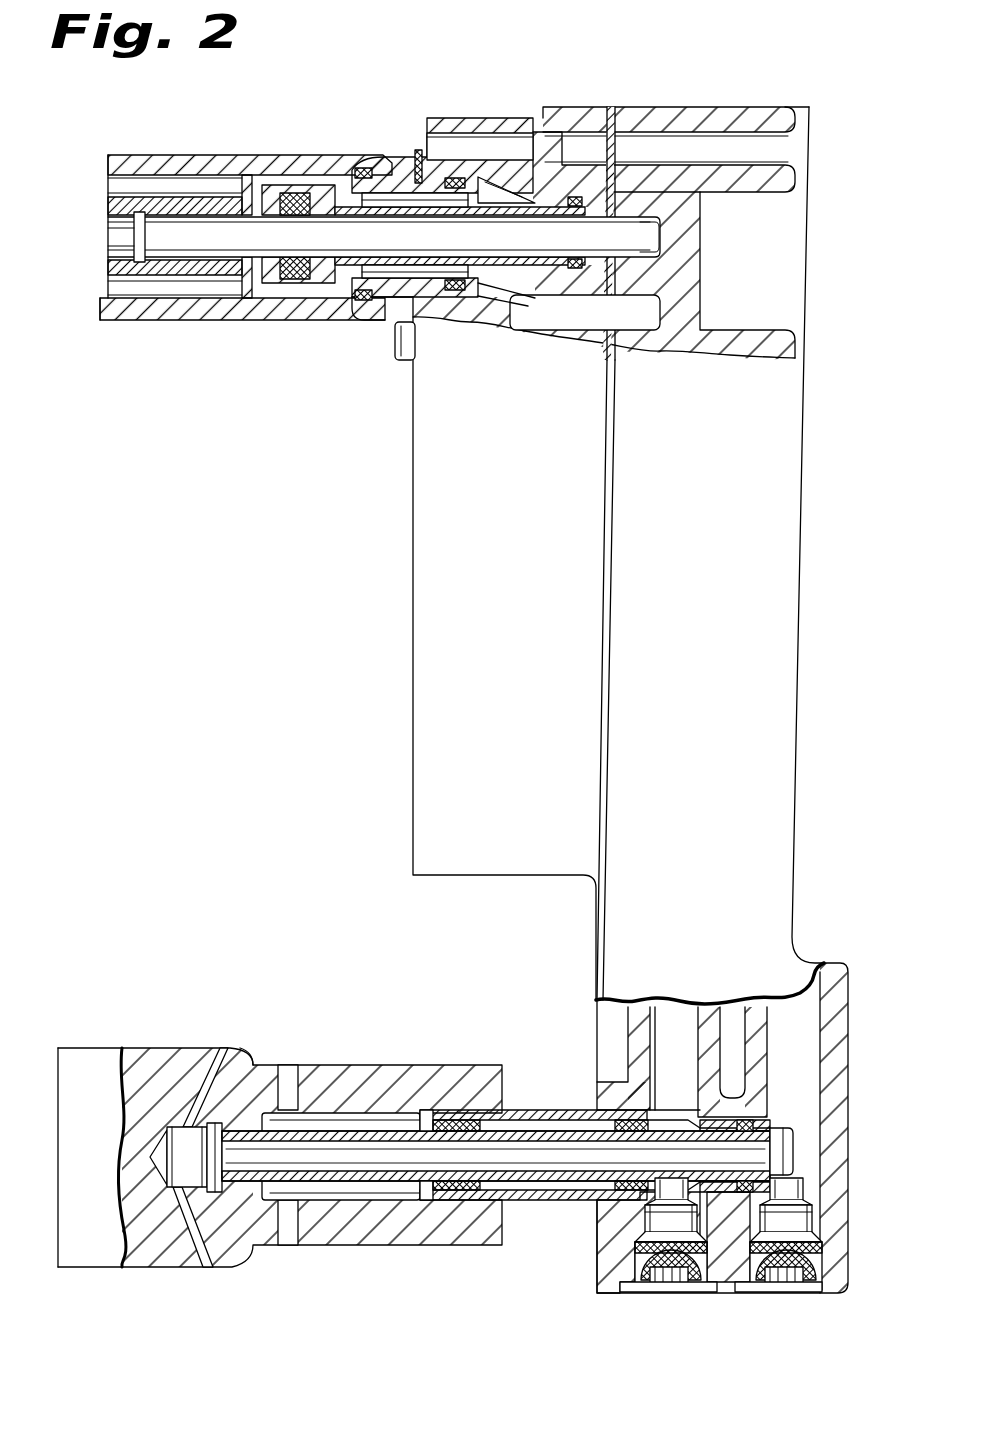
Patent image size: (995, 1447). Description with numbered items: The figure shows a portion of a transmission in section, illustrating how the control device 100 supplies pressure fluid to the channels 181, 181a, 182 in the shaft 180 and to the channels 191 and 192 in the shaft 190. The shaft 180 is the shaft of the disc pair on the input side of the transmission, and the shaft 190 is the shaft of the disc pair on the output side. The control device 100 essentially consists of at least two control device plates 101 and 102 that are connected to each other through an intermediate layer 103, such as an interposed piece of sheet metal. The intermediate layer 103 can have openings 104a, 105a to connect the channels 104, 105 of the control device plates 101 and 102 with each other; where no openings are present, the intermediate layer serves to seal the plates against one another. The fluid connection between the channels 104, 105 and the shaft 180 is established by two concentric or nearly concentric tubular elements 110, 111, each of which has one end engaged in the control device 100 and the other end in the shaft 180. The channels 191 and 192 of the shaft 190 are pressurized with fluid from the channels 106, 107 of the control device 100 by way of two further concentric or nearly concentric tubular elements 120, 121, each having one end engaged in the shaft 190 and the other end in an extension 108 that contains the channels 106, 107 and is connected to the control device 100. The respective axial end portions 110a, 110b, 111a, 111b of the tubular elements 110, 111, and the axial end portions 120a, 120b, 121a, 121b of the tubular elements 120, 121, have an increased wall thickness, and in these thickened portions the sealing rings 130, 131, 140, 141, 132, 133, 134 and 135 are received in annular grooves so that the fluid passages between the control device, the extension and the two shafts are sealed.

The control device 100 is at (804, 698).
The control device plate 101 is at (786, 614).
The control device plate 102 is at (414, 560).
The intermediate layer 103 is at (601, 598).
The channel 104 is at (652, 238).
The opening 104a is at (615, 229).
The channel 105 is at (652, 316).
The opening 105a is at (612, 290).
The channel 106 is at (795, 1070).
The channel 107 is at (673, 1058).
The extension 108 is at (854, 1211).
The tubular element 110 is at (405, 163).
The axial end portion 110a is at (380, 300).
The axial end portion 110b is at (474, 178).
The tubular element 111 is at (312, 266).
The axial end portion 111a is at (285, 198).
The axial end portion 111b is at (601, 197).
The tubular element 120 is at (513, 1110).
The axial end portion 120a is at (438, 1110).
The axial end portion 120b is at (612, 1110).
The tubular element 121 is at (372, 1182).
The axial end portion 121a is at (257, 1200).
The axial end portion 121b is at (770, 1124).
The sealing ring 130 is at (303, 192).
The sealing ring 131 is at (573, 197).
The sealing ring 132 is at (252, 1062).
The sealing ring 133 is at (753, 1160).
The sealing ring 134 is at (470, 1207).
The sealing ring 135 is at (637, 1193).
The sealing ring 140 is at (362, 296).
The sealing ring 141 is at (453, 178).
The shaft 180 is at (222, 143).
The channel 181 is at (148, 288).
The channel 181a is at (176, 172).
The channel 182 is at (122, 245).
The shaft 190 is at (312, 1054).
The channel 191 is at (217, 1254).
The channel 192 is at (287, 1240).